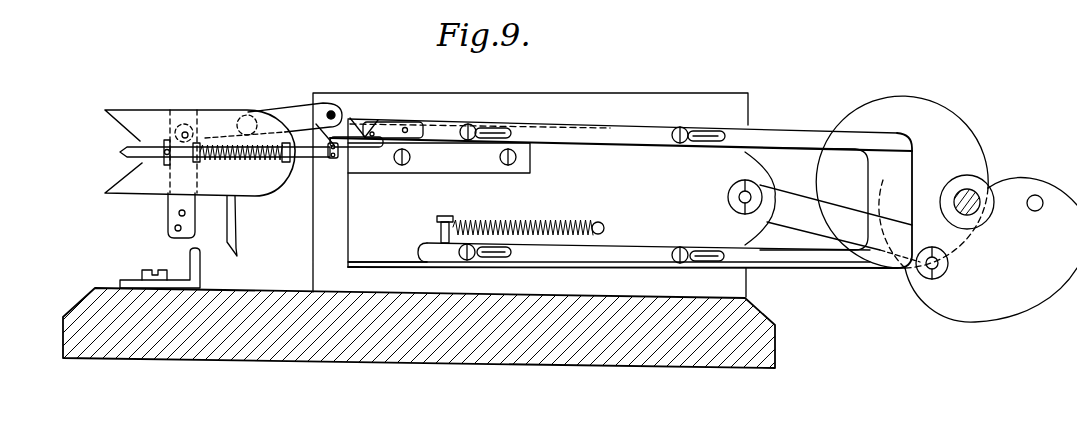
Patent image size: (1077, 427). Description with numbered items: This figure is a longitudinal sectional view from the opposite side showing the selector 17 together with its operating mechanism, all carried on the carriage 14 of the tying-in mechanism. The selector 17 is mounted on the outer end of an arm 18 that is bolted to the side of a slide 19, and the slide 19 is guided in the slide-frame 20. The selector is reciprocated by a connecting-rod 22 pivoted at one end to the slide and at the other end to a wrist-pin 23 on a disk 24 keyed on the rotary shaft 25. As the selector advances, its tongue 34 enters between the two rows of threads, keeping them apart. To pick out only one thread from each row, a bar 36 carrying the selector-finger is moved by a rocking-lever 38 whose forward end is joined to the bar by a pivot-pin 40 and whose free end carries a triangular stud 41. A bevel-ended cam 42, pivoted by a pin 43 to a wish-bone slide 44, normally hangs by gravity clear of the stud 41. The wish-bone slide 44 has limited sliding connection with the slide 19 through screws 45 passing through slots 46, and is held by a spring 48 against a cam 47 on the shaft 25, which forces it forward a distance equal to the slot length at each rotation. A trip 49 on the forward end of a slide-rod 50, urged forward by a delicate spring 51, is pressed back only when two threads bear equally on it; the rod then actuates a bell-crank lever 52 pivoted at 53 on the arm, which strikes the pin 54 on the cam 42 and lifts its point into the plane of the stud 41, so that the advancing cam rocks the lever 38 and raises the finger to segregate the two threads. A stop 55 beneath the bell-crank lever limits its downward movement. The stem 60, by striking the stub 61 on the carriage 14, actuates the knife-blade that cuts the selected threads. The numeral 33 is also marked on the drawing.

The carriage 14 is at (530, 357).
The selector 17 is at (265, 182).
The arm 18 is at (433, 162).
The slide 19 is at (498, 191).
The slide-frame 20 is at (323, 247).
The connecting-rod 22 is at (820, 218).
The wrist-pin 23 is at (928, 263).
The disk 24 is at (1062, 155).
The rotary shaft 25 is at (967, 190).
The holder 33 is at (113, 183).
The tongue 34 is at (150, 155).
The bar 36 is at (178, 200).
The rocking-lever 38 is at (290, 108).
The pivot-pin 40 is at (182, 125).
The stud 41 is at (333, 113).
The bevel-ended cam 42 is at (374, 130).
The pin 43 is at (415, 125).
The wish-bone slide 44 is at (818, 140).
The screws 45 is at (470, 126).
The slots 46 is at (505, 130).
The cam 47 is at (996, 309).
The spring 48 is at (533, 223).
The trip 49 is at (165, 139).
The slide-rod 50 is at (188, 148).
The spring 51 is at (223, 162).
The bell-crank lever 52 is at (343, 152).
The pivot 53 is at (327, 116).
The pin 54 is at (405, 122).
The stop 55 is at (352, 143).
The stem 60 is at (233, 228).
The stub 61 is at (196, 270).